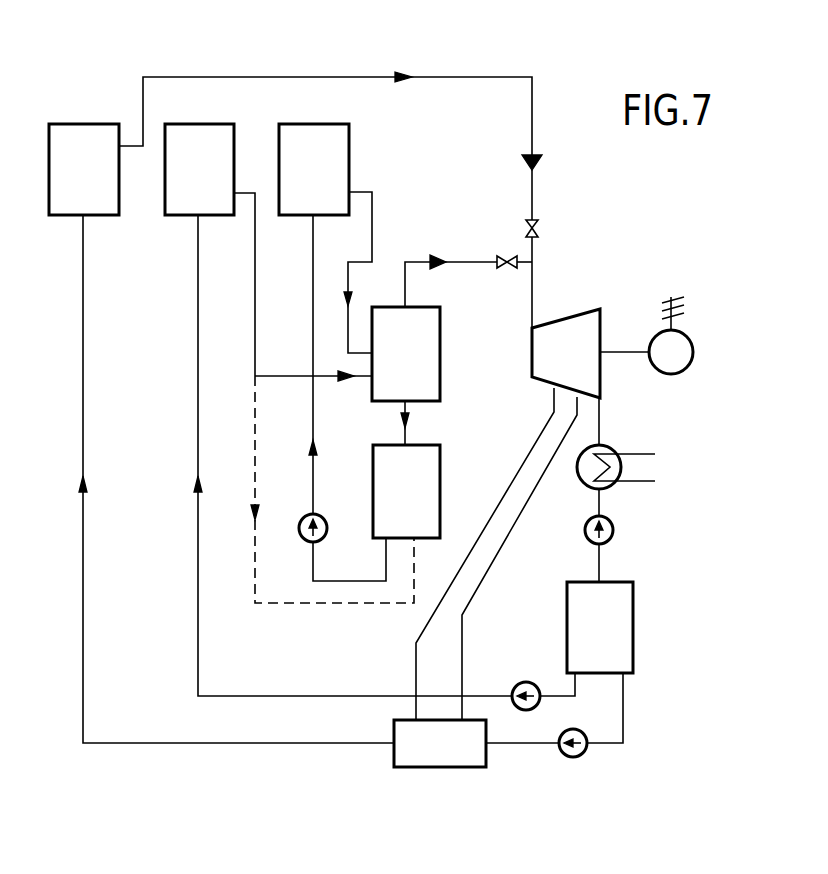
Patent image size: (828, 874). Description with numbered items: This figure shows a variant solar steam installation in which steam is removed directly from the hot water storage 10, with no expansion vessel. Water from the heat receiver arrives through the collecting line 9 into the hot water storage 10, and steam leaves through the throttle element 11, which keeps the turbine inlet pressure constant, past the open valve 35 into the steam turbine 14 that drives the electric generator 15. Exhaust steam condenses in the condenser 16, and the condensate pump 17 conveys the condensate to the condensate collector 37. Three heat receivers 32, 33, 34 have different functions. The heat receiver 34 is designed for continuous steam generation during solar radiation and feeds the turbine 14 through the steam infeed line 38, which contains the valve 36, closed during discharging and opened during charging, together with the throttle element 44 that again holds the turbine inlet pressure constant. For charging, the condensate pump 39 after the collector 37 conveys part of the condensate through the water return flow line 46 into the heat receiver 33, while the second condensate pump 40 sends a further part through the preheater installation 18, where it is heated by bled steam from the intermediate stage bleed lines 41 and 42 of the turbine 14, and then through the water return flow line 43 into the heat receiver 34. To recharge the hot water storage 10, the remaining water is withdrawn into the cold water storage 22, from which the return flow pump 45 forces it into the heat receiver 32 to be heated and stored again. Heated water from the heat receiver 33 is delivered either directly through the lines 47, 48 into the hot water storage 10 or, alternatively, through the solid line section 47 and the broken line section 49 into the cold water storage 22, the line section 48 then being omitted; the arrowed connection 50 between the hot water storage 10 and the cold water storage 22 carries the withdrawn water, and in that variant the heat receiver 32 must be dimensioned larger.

The collecting line 9 is at (374, 220).
The hot water storage 10 is at (390, 368).
The throttle element 11 is at (442, 258).
The steam turbine 14 is at (550, 367).
The electric generator 15 is at (691, 337).
The condenser 16 is at (614, 448).
The condensate pump 17 is at (614, 528).
The preheater installation 18 is at (458, 762).
The cold water storage 22 is at (390, 502).
The heat receiver 32 is at (294, 183).
The heat receiver 33 is at (179, 183).
The heat receiver 34 is at (63, 183).
The valve 35 is at (507, 270).
The valve 36 is at (540, 224).
The condensate collector 37 is at (583, 646).
The steam infeed line 38 is at (297, 75).
The condensate pump 39 is at (516, 684).
The condensate pump 40 is at (576, 759).
The intermediate stage bleed line 41 is at (538, 434).
The intermediate stage bleed line 42 is at (526, 502).
The water return flow line 43 is at (80, 550).
The throttle element 44 is at (545, 163).
The return flow pump 45 is at (322, 518).
The water return flow line 46 is at (196, 416).
The line section 47 is at (253, 299).
The line section 48 is at (279, 374).
The line section 49 is at (253, 463).
The conduit 50 is at (402, 421).